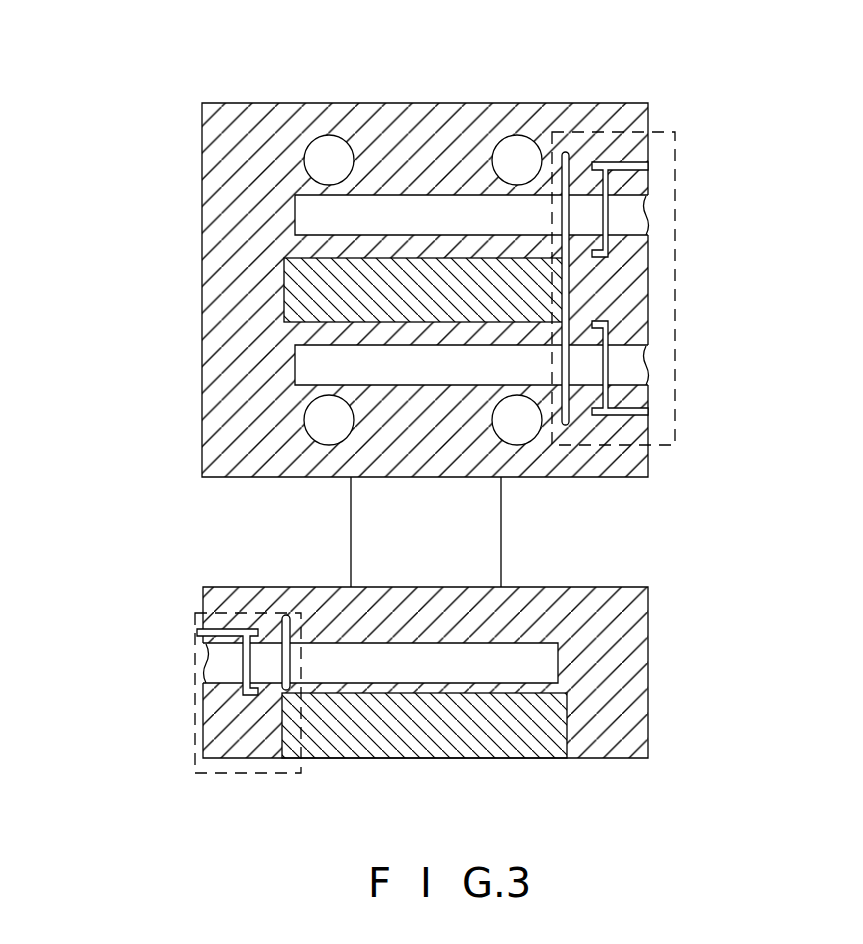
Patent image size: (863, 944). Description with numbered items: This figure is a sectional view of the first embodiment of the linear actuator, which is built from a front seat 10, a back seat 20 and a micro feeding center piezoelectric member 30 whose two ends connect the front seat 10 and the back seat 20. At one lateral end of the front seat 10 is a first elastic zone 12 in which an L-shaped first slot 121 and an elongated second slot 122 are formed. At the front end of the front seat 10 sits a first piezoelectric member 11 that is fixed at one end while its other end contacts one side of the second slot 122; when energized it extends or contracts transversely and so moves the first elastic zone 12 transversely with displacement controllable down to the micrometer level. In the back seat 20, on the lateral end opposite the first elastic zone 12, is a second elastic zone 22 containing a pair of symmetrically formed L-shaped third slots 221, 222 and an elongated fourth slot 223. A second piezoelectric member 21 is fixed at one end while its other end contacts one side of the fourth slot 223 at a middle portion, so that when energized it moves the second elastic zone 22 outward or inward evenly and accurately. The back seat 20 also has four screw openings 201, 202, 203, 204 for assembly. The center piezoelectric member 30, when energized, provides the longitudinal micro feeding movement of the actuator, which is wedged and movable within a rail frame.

The front seat 10 is at (648, 737).
The first piezoelectric member 11 is at (460, 750).
The first elastic zone 12 is at (214, 700).
The first slot 121 is at (205, 632).
The second slot 122 is at (288, 620).
The back seat 20 is at (212, 115).
The second piezoelectric member 21 is at (310, 293).
The screw opening 201 is at (331, 142).
The screw opening 202 is at (516, 142).
The screw opening 203 is at (334, 436).
The screw opening 204 is at (522, 437).
The second elastic zone 22 is at (692, 266).
The third slot 221 is at (648, 166).
The third slot 222 is at (645, 413).
The fourth slot 223 is at (568, 152).
The center piezoelectric member 30 is at (493, 557).